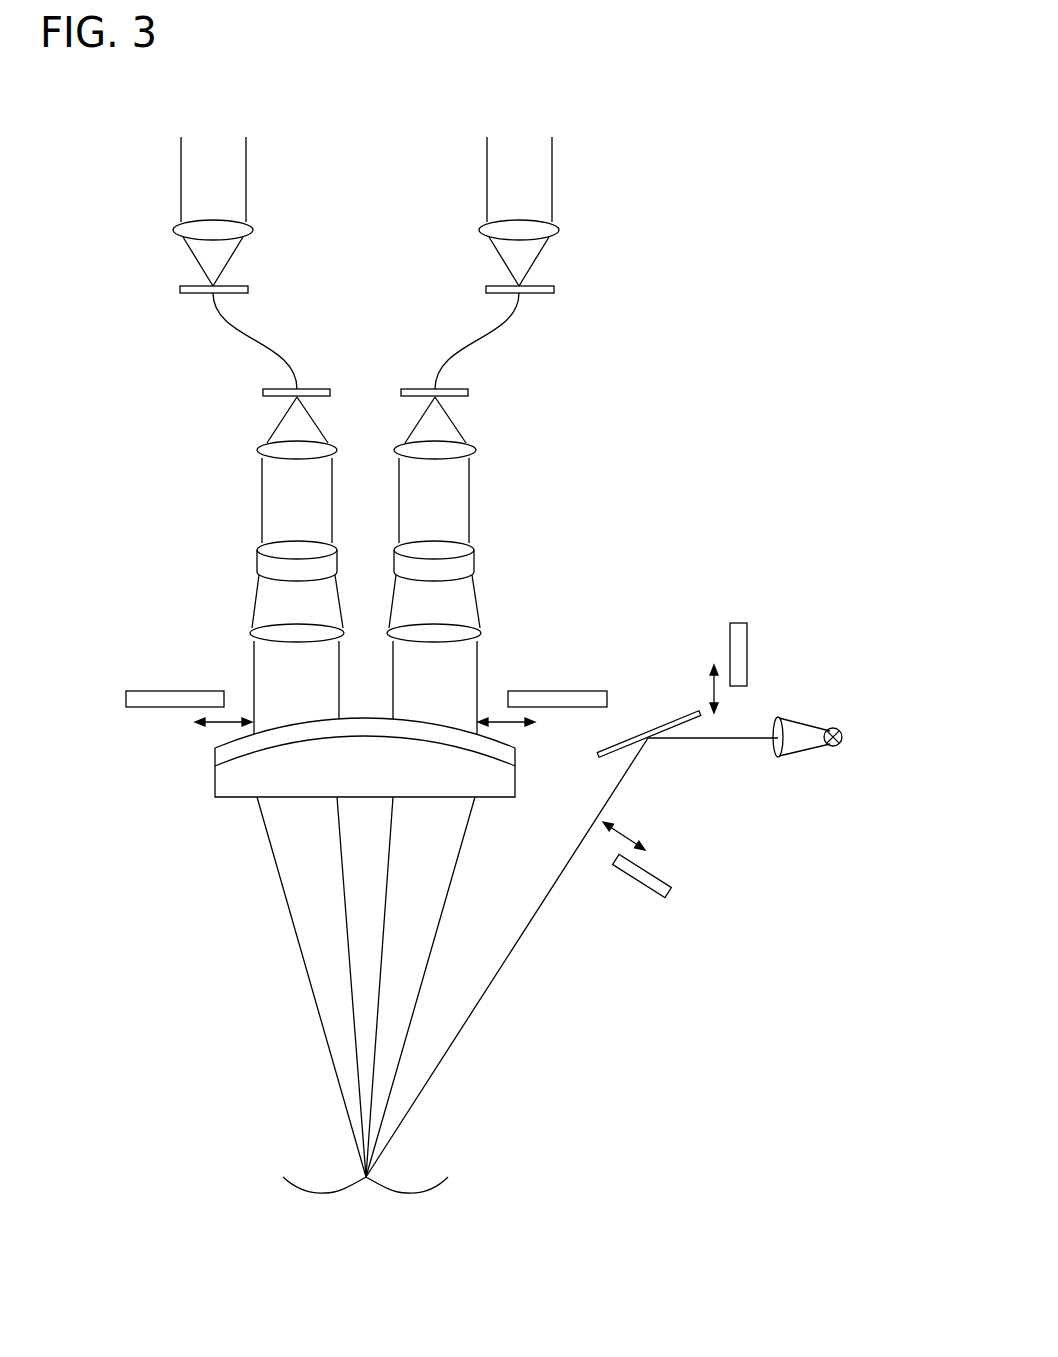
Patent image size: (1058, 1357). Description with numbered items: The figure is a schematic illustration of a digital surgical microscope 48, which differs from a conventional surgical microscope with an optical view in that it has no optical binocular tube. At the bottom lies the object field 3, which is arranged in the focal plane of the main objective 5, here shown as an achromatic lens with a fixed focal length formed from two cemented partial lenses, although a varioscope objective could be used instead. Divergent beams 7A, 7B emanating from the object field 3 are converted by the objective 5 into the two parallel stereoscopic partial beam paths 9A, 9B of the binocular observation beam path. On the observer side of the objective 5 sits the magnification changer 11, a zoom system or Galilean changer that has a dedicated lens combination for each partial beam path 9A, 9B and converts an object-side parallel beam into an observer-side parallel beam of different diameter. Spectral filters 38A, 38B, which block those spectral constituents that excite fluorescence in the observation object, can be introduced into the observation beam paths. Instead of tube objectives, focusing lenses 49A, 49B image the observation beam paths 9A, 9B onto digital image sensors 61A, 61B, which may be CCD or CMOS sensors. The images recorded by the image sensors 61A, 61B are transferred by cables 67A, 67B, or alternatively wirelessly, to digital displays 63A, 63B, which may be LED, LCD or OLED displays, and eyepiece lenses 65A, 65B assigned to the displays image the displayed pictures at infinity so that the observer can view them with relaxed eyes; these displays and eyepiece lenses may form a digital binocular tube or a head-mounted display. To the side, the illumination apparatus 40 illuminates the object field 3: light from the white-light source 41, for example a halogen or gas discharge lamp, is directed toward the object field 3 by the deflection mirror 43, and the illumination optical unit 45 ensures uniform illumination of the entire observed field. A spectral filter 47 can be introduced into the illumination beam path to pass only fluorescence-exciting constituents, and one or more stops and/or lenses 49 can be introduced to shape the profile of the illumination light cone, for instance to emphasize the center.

The object field 3 is at (380, 1178).
The objective 5 is at (195, 713).
The divergent beam 7A is at (295, 930).
The divergent beam 7B is at (458, 860).
The stereoscopic partial beam path 9A is at (255, 678).
The stereoscopic partial beam path 9B is at (479, 678).
The magnification changer 11 is at (220, 535).
The spectral filter 38A is at (150, 690).
The spectral filter 38B is at (590, 690).
The illumination apparatus 40 is at (819, 608).
The white-light source 41 is at (843, 735).
The deflection mirror 43 is at (666, 725).
The illumination optical unit 45 is at (817, 725).
The spectral filter 47 is at (664, 880).
The digital surgical microscope 48 is at (746, 328).
The stop and/or lens 49 is at (750, 637).
The focusing lens 49A is at (258, 452).
The focusing lens 49B is at (477, 452).
The digital image sensor 61A is at (263, 392).
The digital image sensor 61B is at (468, 392).
The digital display 63A is at (181, 289).
The digital display 63B is at (554, 289).
The eyepiece lens 65A is at (177, 231).
The eyepiece lens 65B is at (556, 231).
The cable 67A is at (238, 333).
The cable 67B is at (497, 333).